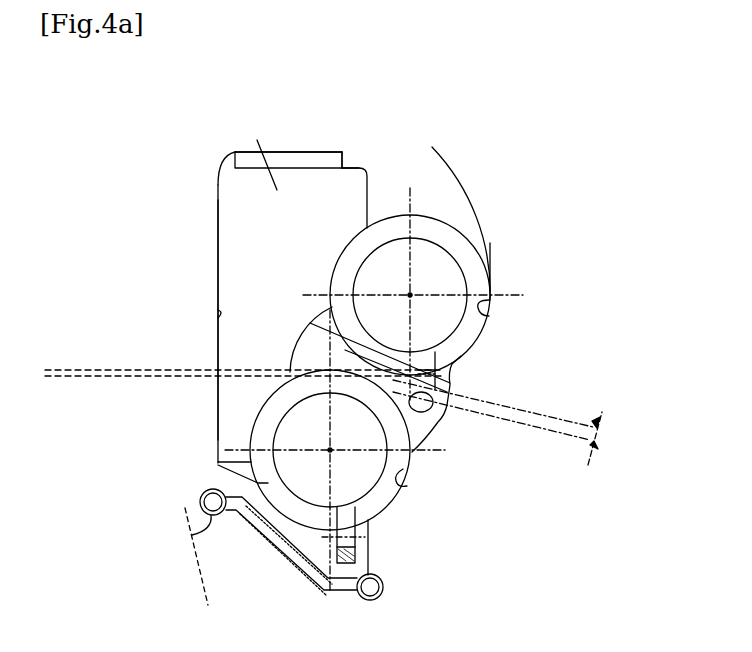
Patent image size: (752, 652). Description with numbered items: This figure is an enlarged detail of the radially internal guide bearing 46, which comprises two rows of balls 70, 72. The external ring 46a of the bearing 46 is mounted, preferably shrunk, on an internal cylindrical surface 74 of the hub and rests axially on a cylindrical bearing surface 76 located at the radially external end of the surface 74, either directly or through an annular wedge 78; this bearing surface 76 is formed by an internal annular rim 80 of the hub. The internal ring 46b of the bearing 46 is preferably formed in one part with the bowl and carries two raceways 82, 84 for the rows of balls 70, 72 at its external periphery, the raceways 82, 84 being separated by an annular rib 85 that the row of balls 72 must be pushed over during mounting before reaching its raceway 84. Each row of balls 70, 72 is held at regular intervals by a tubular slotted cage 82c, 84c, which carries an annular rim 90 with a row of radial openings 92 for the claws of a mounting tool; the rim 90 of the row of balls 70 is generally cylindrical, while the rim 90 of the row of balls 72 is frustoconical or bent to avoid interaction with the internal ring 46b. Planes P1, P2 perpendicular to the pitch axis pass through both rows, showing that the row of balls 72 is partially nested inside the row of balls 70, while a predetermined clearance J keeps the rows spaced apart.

The radially internal guide bearing 46 is at (452, 457).
The external ring 46a is at (228, 272).
The internal ring 46b is at (505, 408).
The row of balls 70 is at (392, 526).
The row of balls 72 is at (466, 234).
The internal cylindrical surface 74 is at (218, 312).
The cylindrical bearing surface 76 is at (298, 152).
The annular wedge 78 is at (315, 160).
The internal annular rim 80 is at (273, 176).
The raceway 82 is at (404, 481).
The cage 82c is at (218, 462).
The raceway 84 is at (490, 307).
The cage 84c is at (480, 272).
The annular rib 85 is at (464, 372).
The annular rim 90 is at (422, 405).
The openings 92 is at (315, 324).
The plane P1 is at (125, 378).
The plane P2 is at (88, 368).
The clearance J is at (605, 418).